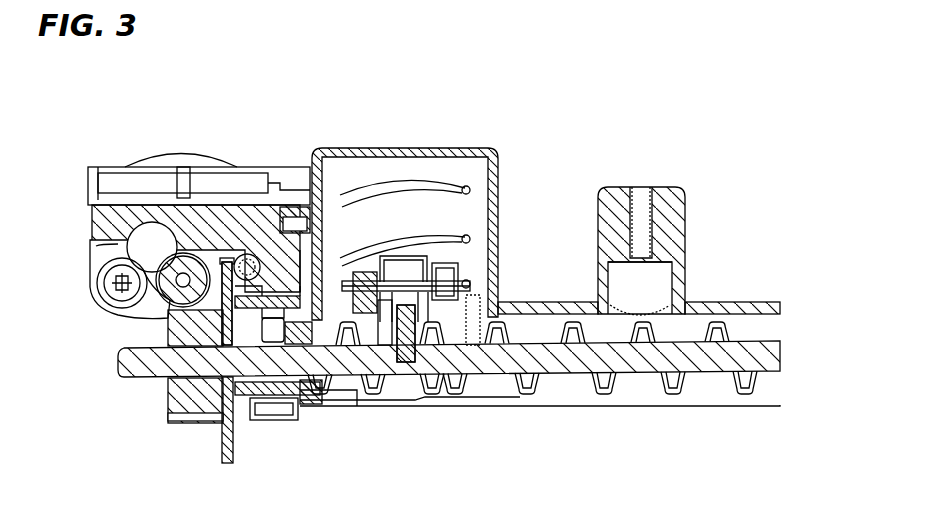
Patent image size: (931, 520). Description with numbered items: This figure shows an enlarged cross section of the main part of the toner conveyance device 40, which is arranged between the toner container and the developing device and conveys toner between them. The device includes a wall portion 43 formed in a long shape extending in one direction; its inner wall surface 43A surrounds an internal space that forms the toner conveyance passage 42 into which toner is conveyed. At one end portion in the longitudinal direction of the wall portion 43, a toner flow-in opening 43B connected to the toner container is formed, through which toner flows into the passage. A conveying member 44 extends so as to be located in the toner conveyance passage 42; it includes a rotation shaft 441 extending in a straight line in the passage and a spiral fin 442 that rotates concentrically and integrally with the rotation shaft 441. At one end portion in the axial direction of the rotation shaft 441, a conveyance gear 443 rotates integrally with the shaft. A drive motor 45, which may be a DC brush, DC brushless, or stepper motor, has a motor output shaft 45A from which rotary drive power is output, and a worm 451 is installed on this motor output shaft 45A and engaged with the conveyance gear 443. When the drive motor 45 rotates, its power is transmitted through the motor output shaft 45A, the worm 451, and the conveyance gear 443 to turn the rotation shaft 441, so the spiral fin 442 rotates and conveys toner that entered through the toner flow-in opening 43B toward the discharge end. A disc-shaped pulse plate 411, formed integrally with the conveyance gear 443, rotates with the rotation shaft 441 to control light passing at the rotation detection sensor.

The toner conveyance device 40 is at (527, 108).
The toner conveyance passage 42 is at (718, 387).
The wall portion 43 is at (530, 312).
The inner wall surface 43A is at (542, 330).
The toner flow-in opening 43B is at (400, 406).
The conveying member 44 is at (618, 452).
The rotation shaft 441 is at (497, 356).
The spiral fin 442 is at (608, 390).
The conveyance gear 443 is at (168, 395).
The pulse plate 411 is at (233, 455).
The drive motor 45 is at (167, 158).
The worm 451 is at (168, 302).
The motor output shaft 45A is at (222, 315).